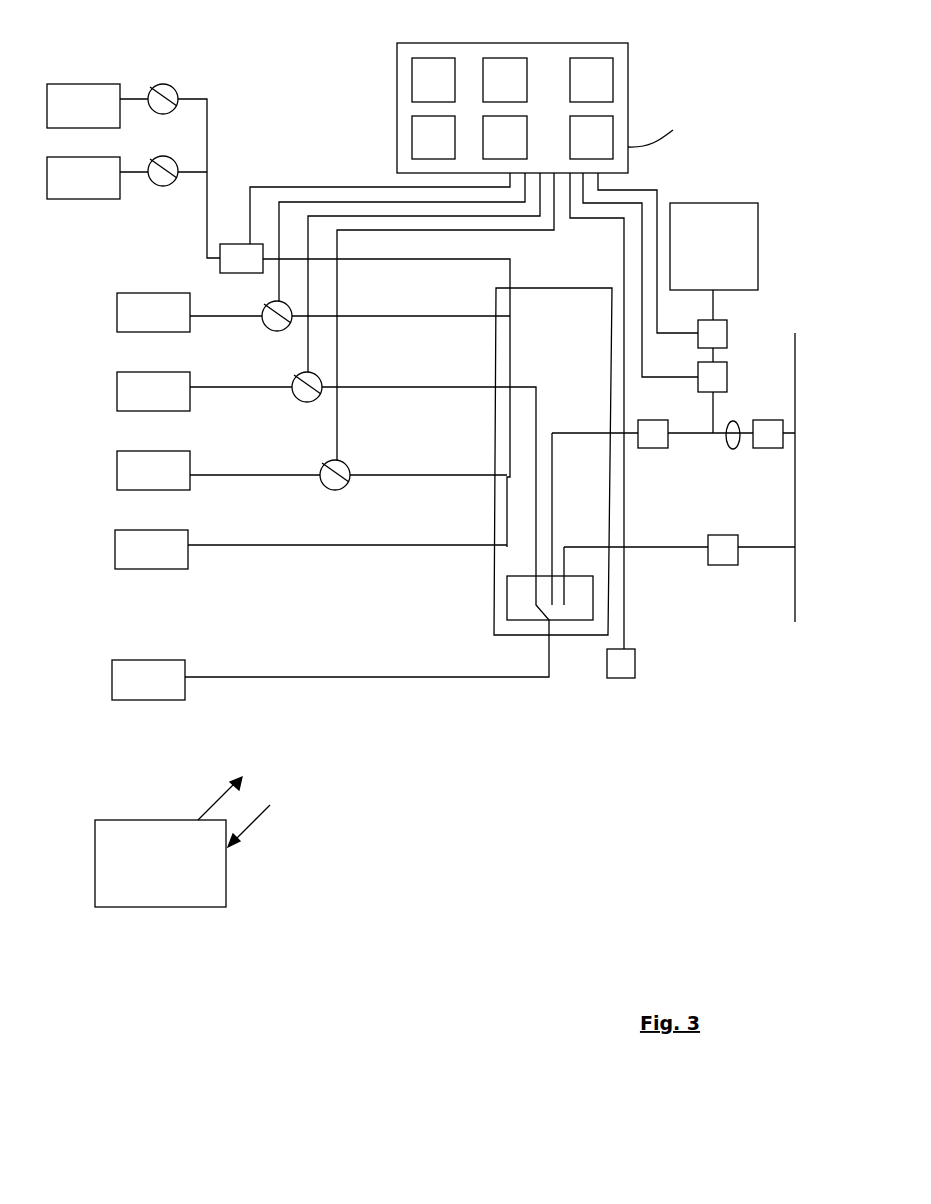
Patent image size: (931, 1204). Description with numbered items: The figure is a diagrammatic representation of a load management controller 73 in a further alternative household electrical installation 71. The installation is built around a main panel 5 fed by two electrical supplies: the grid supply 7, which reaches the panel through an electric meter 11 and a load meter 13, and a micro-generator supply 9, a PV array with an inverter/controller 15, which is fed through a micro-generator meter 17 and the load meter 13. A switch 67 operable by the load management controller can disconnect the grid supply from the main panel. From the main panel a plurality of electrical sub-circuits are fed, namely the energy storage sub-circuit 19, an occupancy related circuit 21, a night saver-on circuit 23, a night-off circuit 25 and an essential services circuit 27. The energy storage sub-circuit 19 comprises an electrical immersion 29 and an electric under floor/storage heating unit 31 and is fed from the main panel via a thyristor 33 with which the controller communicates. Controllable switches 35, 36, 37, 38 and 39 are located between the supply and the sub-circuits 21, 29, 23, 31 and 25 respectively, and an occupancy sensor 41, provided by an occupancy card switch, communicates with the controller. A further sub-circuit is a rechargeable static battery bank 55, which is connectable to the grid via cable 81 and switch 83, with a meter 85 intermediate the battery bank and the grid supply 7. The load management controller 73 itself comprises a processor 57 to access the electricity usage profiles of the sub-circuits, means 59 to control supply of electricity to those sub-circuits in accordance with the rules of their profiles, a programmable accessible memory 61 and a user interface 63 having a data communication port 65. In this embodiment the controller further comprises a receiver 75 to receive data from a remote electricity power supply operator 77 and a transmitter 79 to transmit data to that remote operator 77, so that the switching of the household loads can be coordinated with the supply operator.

The main panel 5 is at (592, 635).
The grid supply 7 is at (795, 595).
The micro-generator supply 9 is at (714, 246).
The electric meter 11 is at (755, 449).
The load meter 13 is at (665, 449).
The inverter/controller 15 is at (712, 334).
The micro-generator meter 17 is at (712, 377).
The energy storage sub-circuit 19 is at (243, 124).
The occupancy related circuit 21 is at (130, 315).
The night saver-on circuit 23 is at (130, 388).
The night-off circuit 25 is at (130, 475).
The essential services circuit 27 is at (128, 552).
The electrical immersion 29 is at (83, 106).
The electric under floor/storage heating unit 31 is at (83, 178).
The thyristor 33 is at (235, 258).
The switch 35 is at (275, 331).
The switch 36 is at (179, 93).
The switch 37 is at (305, 402).
The switch 38 is at (163, 186).
The switch 39 is at (333, 490).
The occupancy sensor 41 is at (623, 678).
The rechargeable static battery bank 55 is at (140, 676).
The processor 57 is at (505, 80).
The means to control supply of electricity 59 is at (505, 137).
The programmable accessible memory 61 is at (591, 80).
The user interface 63 is at (591, 137).
The data communication port 65 is at (668, 131).
The switch 67 is at (735, 449).
The household electrical installation 71 is at (683, 889).
The load management controller 73 is at (651, 96).
The receiver 75 is at (433, 80).
The remote electricity power supply operator 77 is at (182, 842).
The transmitter 79 is at (433, 137).
The cable 81 is at (680, 547).
The switch 83 is at (520, 620).
The meter 85 is at (725, 552).